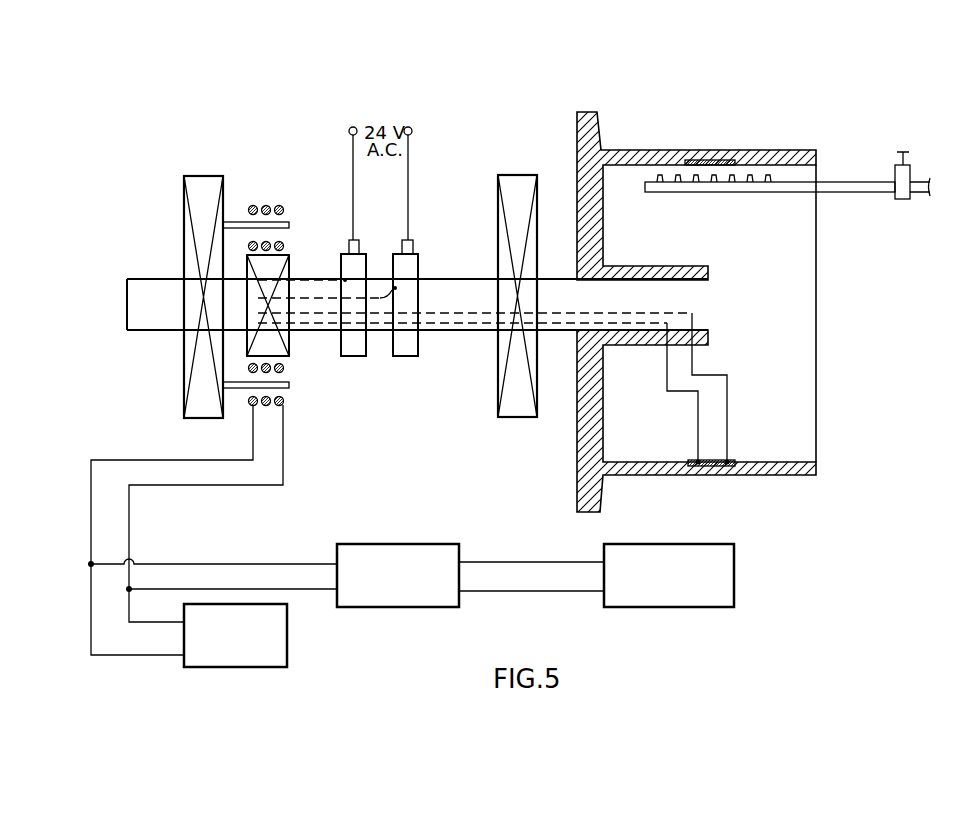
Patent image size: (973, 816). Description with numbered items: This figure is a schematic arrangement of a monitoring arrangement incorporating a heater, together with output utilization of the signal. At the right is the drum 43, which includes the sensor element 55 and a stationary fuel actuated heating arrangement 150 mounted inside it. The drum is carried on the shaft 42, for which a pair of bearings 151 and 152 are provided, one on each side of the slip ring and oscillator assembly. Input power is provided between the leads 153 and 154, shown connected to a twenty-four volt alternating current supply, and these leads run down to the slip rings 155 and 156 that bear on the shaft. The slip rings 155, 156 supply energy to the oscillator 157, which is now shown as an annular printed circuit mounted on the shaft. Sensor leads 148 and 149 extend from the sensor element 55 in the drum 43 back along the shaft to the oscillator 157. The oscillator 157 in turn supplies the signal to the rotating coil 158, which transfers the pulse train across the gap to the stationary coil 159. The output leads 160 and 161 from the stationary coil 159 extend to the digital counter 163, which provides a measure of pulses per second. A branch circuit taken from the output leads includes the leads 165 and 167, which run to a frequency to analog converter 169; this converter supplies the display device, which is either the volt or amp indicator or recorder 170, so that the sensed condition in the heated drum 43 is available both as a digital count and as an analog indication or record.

The shaft 42 is at (459, 288).
The drum 43 is at (767, 471).
The sensor element 55 is at (716, 460).
The sensor lead 148 is at (728, 407).
The sensor lead 149 is at (698, 418).
The stationary fuel actuated heating arrangement 150 is at (841, 184).
The bearing 151 is at (208, 184).
The bearing 152 is at (517, 172).
The lead 153 is at (351, 127).
The lead 154 is at (412, 129).
The slip ring 155 is at (355, 240).
The slip ring 156 is at (410, 239).
The oscillator 157 is at (290, 274).
The rotating coil 158 is at (283, 243).
The stationary coil 159 is at (281, 208).
The output lead 160 is at (91, 526).
The output lead 161 is at (130, 526).
The digital counter 163 is at (289, 656).
The lead 165 is at (190, 563).
The lead 167 is at (244, 588).
The frequency to analog converter 169 is at (432, 544).
The indicator or recorder 170 is at (678, 544).